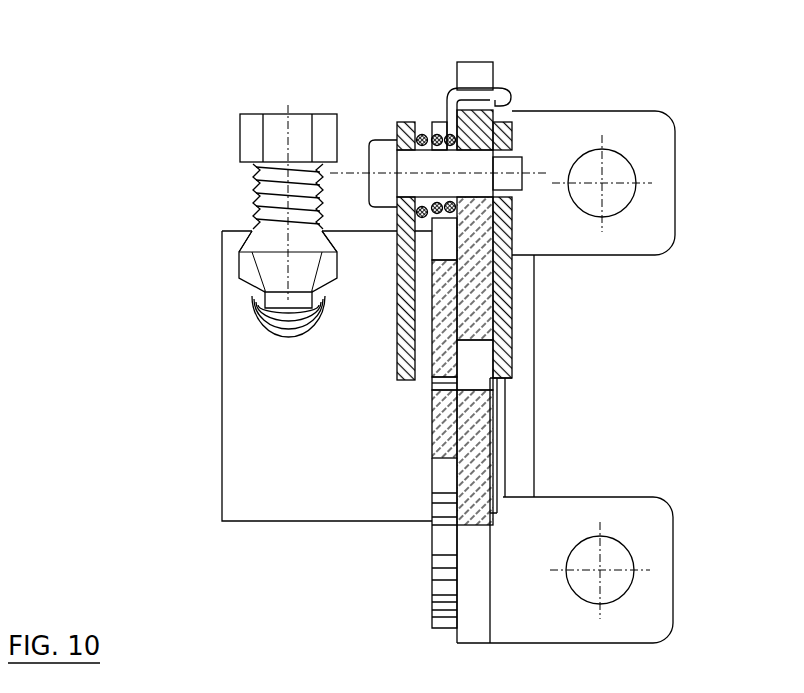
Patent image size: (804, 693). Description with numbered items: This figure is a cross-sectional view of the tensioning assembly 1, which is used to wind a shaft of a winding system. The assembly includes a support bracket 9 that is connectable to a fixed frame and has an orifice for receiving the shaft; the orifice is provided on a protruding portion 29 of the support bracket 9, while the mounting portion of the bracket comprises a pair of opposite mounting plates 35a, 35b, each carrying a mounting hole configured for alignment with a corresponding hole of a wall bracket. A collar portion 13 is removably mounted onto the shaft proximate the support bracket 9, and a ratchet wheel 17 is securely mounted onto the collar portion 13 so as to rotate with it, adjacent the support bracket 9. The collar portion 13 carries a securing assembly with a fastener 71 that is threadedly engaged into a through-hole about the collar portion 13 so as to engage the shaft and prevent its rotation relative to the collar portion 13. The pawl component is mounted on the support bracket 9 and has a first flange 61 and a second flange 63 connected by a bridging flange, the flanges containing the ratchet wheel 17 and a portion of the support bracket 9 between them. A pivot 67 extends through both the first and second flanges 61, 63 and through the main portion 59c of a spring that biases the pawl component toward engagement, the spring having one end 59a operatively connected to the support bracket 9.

The tensioning assembly 1 is at (739, 45).
The collar portion 13 is at (334, 457).
The ratchet wheel 17 is at (441, 353).
The support bracket 9 is at (520, 376).
The protruding portion 29 is at (480, 320).
The mounting plate 35a is at (668, 117).
The mounting plate 35b is at (668, 503).
The spring end 59a is at (477, 90).
The main portion of the spring 59c is at (422, 133).
The first flange 61 is at (395, 341).
The second flange 63 is at (514, 312).
The pivot 67 is at (410, 172).
The fastener 71 is at (246, 185).